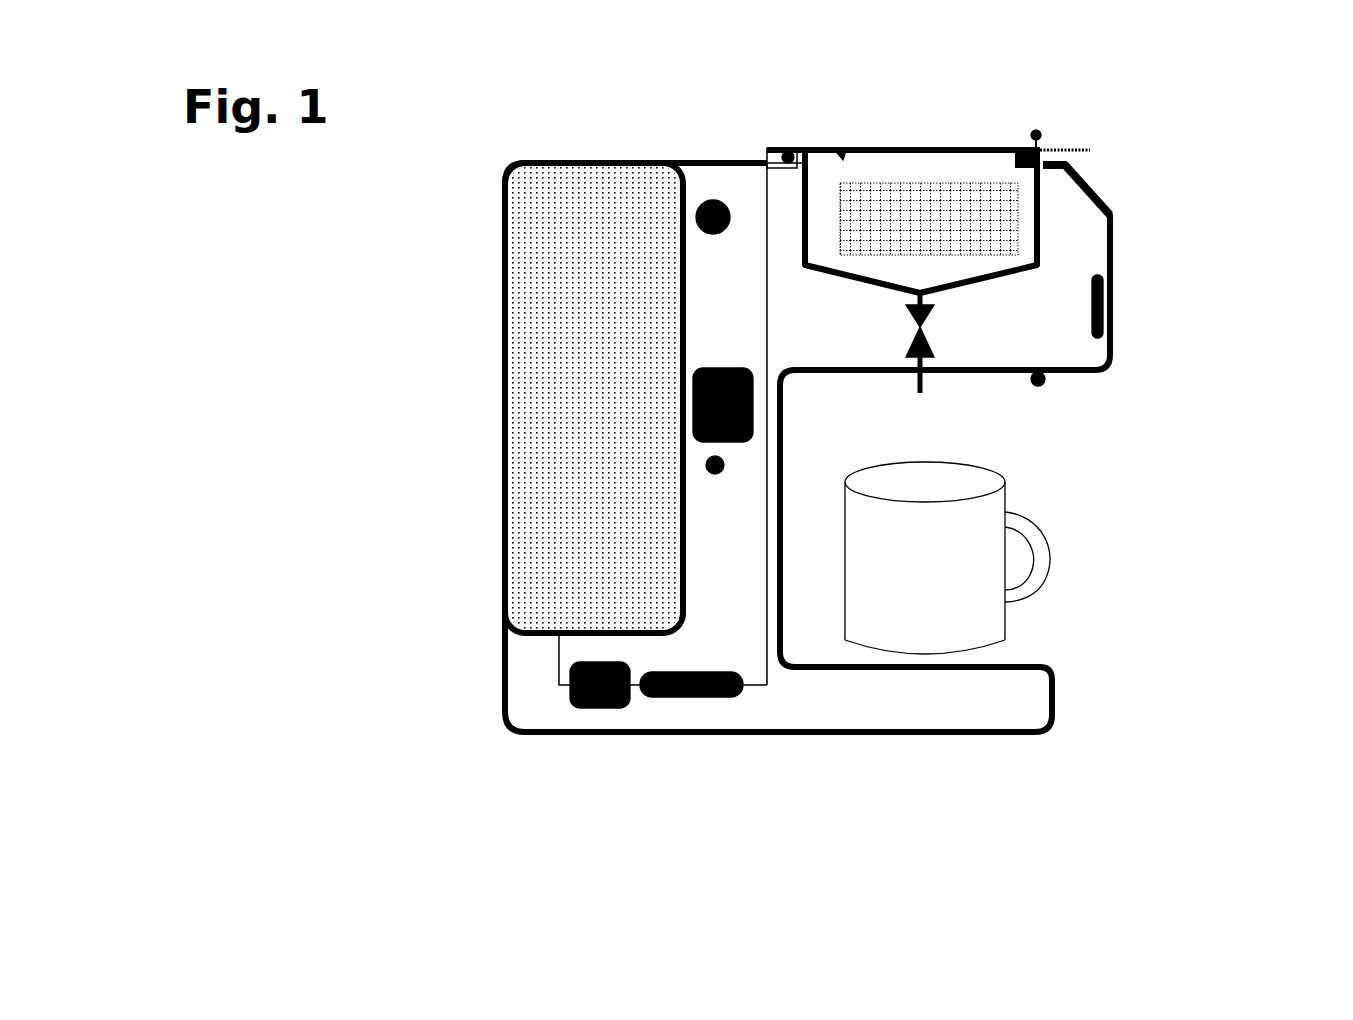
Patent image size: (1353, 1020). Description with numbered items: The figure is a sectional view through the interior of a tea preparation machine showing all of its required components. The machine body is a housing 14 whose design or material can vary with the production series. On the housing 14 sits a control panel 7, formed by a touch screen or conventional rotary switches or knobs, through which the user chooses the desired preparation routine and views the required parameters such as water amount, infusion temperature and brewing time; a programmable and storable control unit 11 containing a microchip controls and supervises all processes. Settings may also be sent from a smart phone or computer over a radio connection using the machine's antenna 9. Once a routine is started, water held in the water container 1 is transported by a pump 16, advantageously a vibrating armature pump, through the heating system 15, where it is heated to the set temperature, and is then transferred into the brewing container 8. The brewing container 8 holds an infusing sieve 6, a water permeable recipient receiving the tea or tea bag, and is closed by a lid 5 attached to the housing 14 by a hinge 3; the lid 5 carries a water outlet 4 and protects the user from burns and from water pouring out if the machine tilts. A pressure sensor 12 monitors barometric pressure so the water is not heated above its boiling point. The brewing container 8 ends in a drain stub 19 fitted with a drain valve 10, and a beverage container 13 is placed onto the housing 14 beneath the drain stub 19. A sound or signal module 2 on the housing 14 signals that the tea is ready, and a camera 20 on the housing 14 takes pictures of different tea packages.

The water container 1 is at (555, 267).
The sound or signal module 2 is at (722, 203).
The hinge 3 is at (780, 147).
The water outlet 4 is at (841, 157).
The lid 5 is at (960, 147).
The infusing sieve 6 is at (1060, 140).
The control panel 7 is at (1093, 188).
The brewing container 8 is at (1040, 235).
The antenna 9 is at (1113, 307).
The drain valve 10 is at (928, 330).
The control unit 11 is at (718, 410).
The pressure sensor 12 is at (718, 470).
The beverage container 13 is at (905, 588).
The housing 14 is at (1055, 720).
The heating system 15 is at (693, 690).
The pump 16 is at (600, 688).
The drain stub 19 is at (915, 383).
The camera 20 is at (1045, 385).